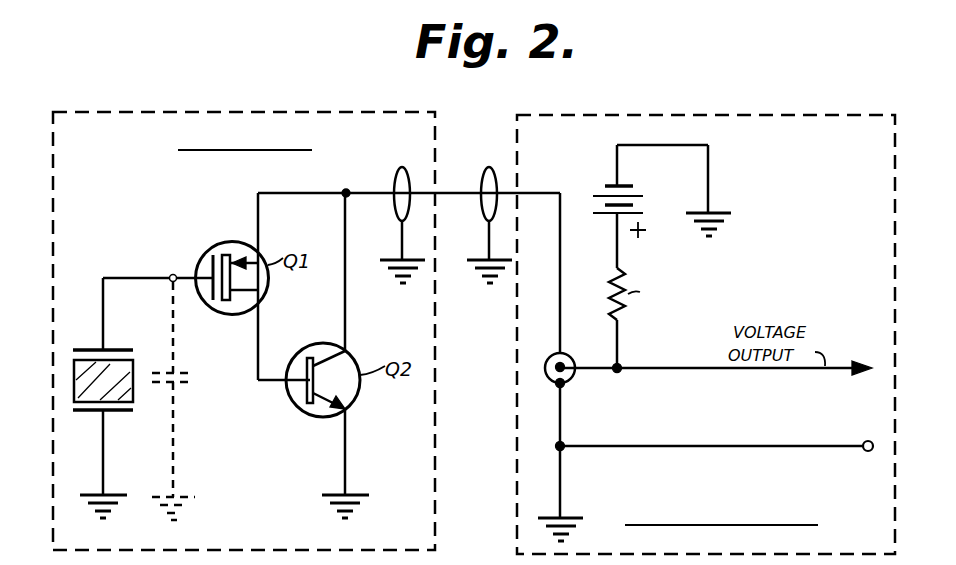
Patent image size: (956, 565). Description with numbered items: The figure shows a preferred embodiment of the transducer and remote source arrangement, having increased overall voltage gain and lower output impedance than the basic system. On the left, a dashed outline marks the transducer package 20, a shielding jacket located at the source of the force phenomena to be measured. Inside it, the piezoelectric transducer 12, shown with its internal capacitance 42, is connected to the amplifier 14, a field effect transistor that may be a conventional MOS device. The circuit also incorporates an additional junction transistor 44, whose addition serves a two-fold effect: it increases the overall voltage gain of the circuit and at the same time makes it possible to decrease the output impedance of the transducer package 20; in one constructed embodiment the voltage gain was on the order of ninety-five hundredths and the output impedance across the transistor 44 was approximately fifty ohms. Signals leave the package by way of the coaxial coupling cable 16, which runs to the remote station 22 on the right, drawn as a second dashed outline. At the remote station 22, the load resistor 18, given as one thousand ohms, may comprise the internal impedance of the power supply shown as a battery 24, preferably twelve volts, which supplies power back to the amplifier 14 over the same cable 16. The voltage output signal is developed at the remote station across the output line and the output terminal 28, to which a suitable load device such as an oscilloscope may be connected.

The piezoelectric transducer 12 is at (73, 395).
The amplifier 14 is at (226, 243).
The coupling cable 16 is at (455, 191).
The load resistor 18 is at (613, 292).
The transducer package 20 is at (170, 112).
The remote station 22 is at (690, 115).
The battery 24 is at (614, 186).
The output terminal 28 is at (868, 440).
The internal capacitance 42 is at (185, 385).
The junction transistor 44 is at (312, 418).